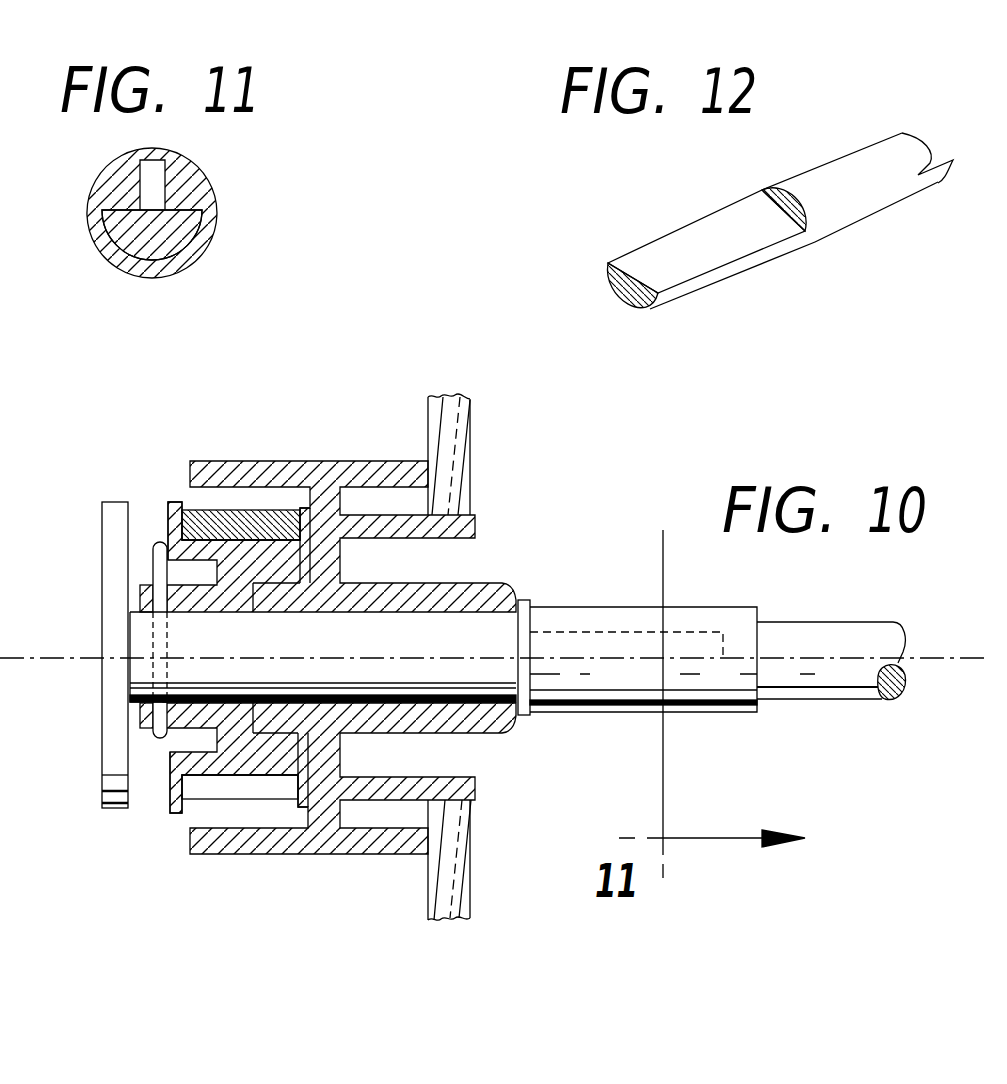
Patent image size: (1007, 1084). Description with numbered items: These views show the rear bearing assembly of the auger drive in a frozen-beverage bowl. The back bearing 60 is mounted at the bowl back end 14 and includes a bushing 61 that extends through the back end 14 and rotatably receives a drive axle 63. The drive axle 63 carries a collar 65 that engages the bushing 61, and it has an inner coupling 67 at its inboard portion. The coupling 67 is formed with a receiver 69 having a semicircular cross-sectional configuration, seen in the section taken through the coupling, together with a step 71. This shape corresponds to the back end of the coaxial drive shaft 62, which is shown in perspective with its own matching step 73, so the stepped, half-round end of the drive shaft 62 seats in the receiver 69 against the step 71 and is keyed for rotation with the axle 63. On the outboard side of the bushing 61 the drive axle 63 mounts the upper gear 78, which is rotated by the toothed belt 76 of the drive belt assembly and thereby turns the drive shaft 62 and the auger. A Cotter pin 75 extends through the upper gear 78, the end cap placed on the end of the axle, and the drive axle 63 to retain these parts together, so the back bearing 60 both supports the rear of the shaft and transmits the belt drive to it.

In FIG. 10, the back end 14 is at (470, 398).
In FIG. 10, the back bearing 60 is at (110, 634).
In FIG. 10, the bushing 61 is at (368, 461).
In FIG. 12, the drive shaft 62 is at (892, 217).
In FIG. 10, the drive shaft 62 is at (835, 621).
In FIG. 10, the drive axle 63 is at (340, 645).
In FIG. 10, the collar 65 is at (525, 600).
In FIG. 11, the inner coupling 67 is at (178, 192).
In FIG. 10, the inner coupling 67 is at (633, 712).
In FIG. 11, the receiver 69 is at (102, 216).
In FIG. 10, the step 71 is at (722, 650).
In FIG. 12, the step 73 is at (762, 201).
In FIG. 10, the Cotter pin 75 is at (113, 808).
In FIG. 10, the toothed belt 76 is at (183, 510).
In FIG. 10, the upper gear 78 is at (170, 813).